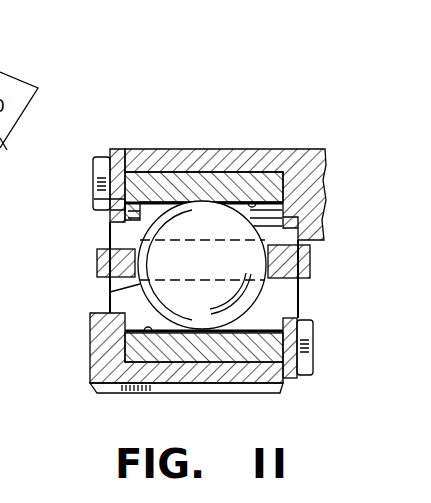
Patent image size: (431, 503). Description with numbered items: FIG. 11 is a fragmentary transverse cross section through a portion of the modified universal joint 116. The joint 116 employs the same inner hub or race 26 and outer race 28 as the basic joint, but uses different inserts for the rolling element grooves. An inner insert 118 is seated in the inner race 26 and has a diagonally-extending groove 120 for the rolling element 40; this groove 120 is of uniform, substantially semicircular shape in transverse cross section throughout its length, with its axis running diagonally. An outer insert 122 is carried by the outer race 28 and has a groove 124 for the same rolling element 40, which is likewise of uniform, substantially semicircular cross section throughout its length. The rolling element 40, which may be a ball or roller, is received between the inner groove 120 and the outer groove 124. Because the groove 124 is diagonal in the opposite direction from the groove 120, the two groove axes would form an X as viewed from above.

The inner hub member or race 26 is at (85, 352).
The outer member or race 28 is at (107, 147).
The rolling element 40 is at (245, 287).
The modified universal joint 116 is at (176, 131).
The inner insert 118 is at (105, 296).
The diagonally-extending groove 120 is at (121, 388).
The outer insert 122 is at (108, 201).
The groove 124 is at (264, 200).